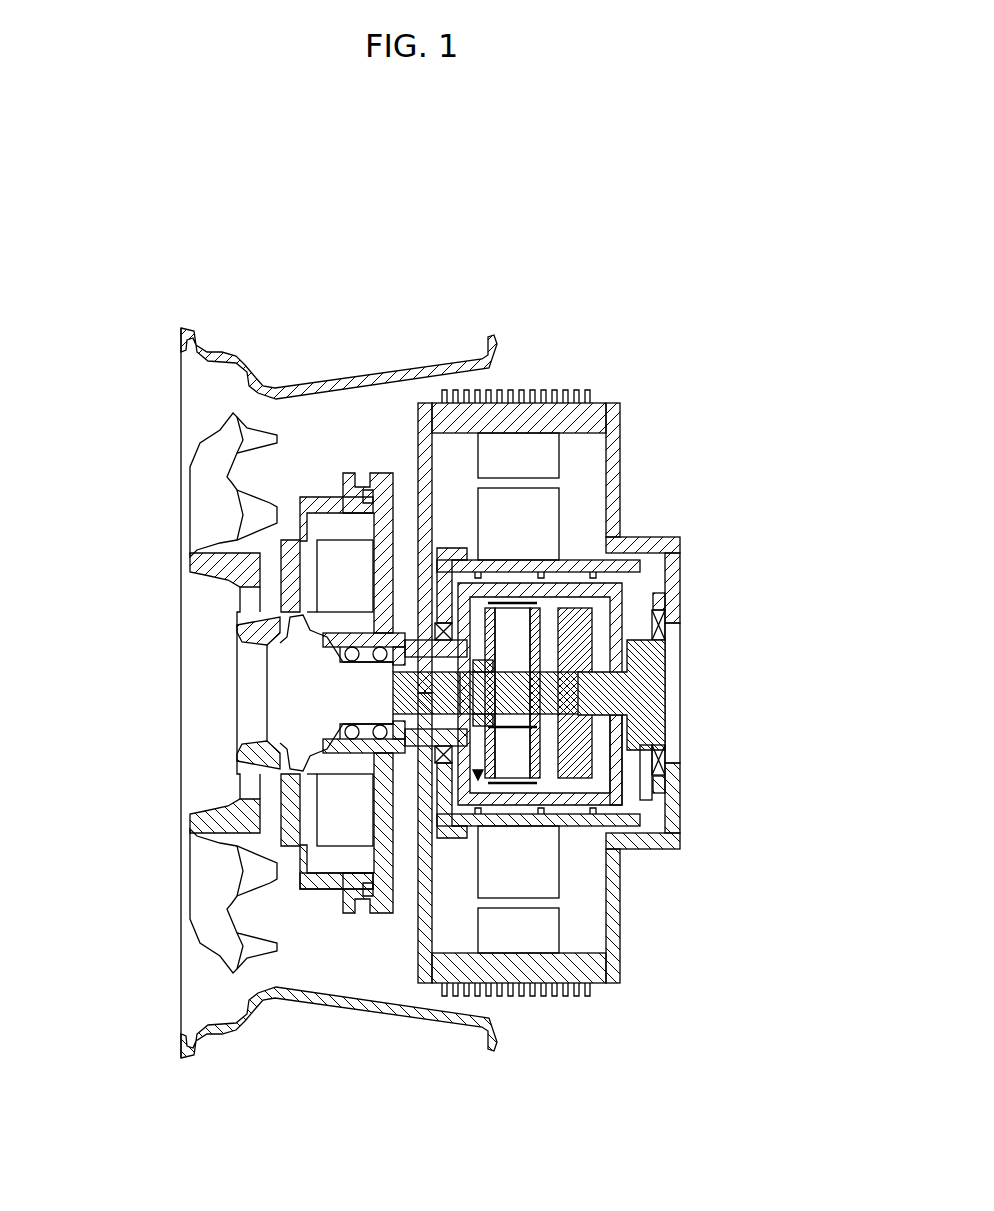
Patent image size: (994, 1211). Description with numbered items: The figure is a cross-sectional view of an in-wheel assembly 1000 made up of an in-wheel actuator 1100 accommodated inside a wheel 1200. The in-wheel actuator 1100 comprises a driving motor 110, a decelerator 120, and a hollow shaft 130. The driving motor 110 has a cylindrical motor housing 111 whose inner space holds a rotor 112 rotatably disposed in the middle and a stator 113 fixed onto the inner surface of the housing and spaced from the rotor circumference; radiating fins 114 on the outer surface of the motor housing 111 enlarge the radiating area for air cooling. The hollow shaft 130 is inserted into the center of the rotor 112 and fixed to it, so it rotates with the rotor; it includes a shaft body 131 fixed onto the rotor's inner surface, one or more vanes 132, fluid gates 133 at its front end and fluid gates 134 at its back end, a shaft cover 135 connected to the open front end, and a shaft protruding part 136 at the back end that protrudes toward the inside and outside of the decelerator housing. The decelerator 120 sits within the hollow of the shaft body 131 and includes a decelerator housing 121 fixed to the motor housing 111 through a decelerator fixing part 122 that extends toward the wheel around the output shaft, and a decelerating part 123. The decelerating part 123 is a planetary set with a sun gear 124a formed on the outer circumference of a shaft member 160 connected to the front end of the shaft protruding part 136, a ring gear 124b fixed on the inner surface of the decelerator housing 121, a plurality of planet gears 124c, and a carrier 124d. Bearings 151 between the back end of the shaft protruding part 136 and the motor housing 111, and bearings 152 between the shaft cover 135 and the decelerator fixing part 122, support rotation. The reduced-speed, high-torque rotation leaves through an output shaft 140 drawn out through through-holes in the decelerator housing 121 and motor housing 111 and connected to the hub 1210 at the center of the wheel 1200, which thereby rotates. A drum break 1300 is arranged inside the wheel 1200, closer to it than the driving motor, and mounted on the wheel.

The in-wheel assembly 1000 is at (583, 248).
The in-wheel actuator 1100 is at (535, 374).
The wheel 1200 is at (205, 312).
The hub 1210 is at (278, 668).
The drum break 1300 is at (323, 893).
The driving motor 110 is at (692, 410).
The motor housing 111 is at (620, 414).
The rotor 112 is at (560, 496).
The stator 113 is at (560, 450).
The radiating fins 114 is at (567, 392).
The decelerator 120 is at (115, 780).
The decelerator housing 121 is at (457, 777).
The decelerator fixing part 122 is at (395, 773).
The decelerating part 123 is at (455, 805).
The sun gear 124a is at (613, 773).
The ring gear 124b is at (535, 725).
The planet gears 124c is at (607, 817).
The carrier 124d is at (520, 760).
The hollow shaft 130 is at (748, 512).
The shaft body 131 is at (590, 560).
The vanes 132 is at (630, 574).
The fluid gates 133 is at (440, 600).
The fluid gates 134 is at (645, 782).
The shaft cover 135 is at (440, 580).
The shaft protruding part 136 is at (665, 662).
The output shaft 140 is at (393, 690).
The bearings 151 is at (665, 753).
The bearings 152 is at (390, 608).
The shaft member 160 is at (663, 726).